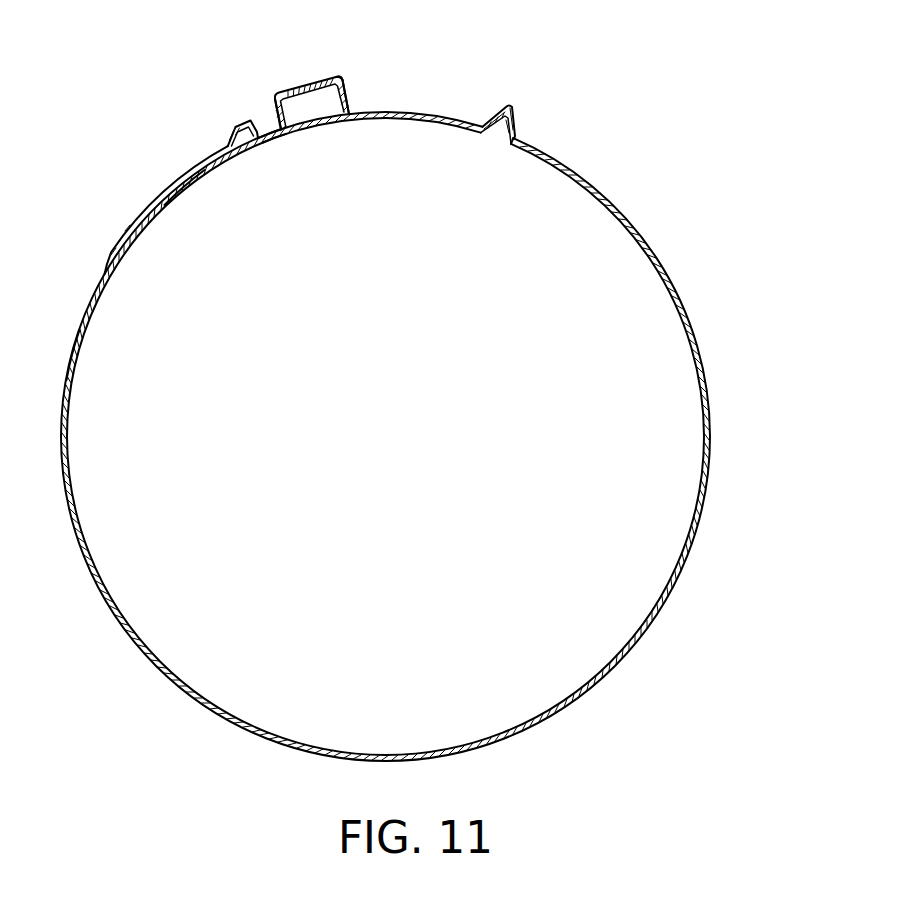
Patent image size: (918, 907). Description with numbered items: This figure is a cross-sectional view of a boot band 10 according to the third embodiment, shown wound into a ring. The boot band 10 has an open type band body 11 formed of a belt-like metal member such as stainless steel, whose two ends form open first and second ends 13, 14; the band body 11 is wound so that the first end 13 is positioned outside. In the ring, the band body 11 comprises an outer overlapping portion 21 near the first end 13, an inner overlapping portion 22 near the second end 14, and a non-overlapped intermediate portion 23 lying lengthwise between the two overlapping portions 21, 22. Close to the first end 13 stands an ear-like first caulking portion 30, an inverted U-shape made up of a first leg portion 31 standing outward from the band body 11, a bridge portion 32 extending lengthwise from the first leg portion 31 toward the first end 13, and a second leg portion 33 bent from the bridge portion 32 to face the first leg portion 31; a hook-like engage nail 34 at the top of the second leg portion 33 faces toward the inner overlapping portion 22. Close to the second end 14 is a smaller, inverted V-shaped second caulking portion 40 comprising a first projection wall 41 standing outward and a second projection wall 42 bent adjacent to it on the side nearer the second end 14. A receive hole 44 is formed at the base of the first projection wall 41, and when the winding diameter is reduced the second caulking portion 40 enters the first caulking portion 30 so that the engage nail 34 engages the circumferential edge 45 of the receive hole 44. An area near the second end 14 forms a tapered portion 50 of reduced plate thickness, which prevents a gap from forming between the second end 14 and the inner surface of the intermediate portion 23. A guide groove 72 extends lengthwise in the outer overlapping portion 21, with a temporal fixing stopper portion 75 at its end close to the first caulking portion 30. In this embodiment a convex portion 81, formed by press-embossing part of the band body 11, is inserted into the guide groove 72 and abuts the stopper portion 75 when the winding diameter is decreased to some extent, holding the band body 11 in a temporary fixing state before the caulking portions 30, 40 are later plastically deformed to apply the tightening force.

The boot band 10 is at (687, 164).
The band body 11 is at (156, 665).
The first end 13 is at (348, 102).
The second end 14 is at (155, 222).
The outer overlapping portion 21 is at (267, 127).
The inner overlapping portion 22 is at (275, 135).
The intermediate portion 23 is at (73, 337).
The first caulking portion 30 is at (318, 80).
The first leg portion 31 is at (270, 115).
The bridge portion 32 is at (278, 98).
The second leg portion 33 is at (347, 78).
The engage nail 34 is at (354, 110).
The second caulking portion 40 is at (512, 107).
The first projection wall 41 is at (517, 120).
The second projection wall 42 is at (490, 117).
The receive hole 44 is at (505, 130).
The circumferential edge 45 is at (514, 134).
The tapered portion 50 is at (200, 173).
The guide groove 72 is at (150, 215).
The temporal fixing stopper portion 75 is at (257, 123).
The convex portion 81 is at (230, 127).